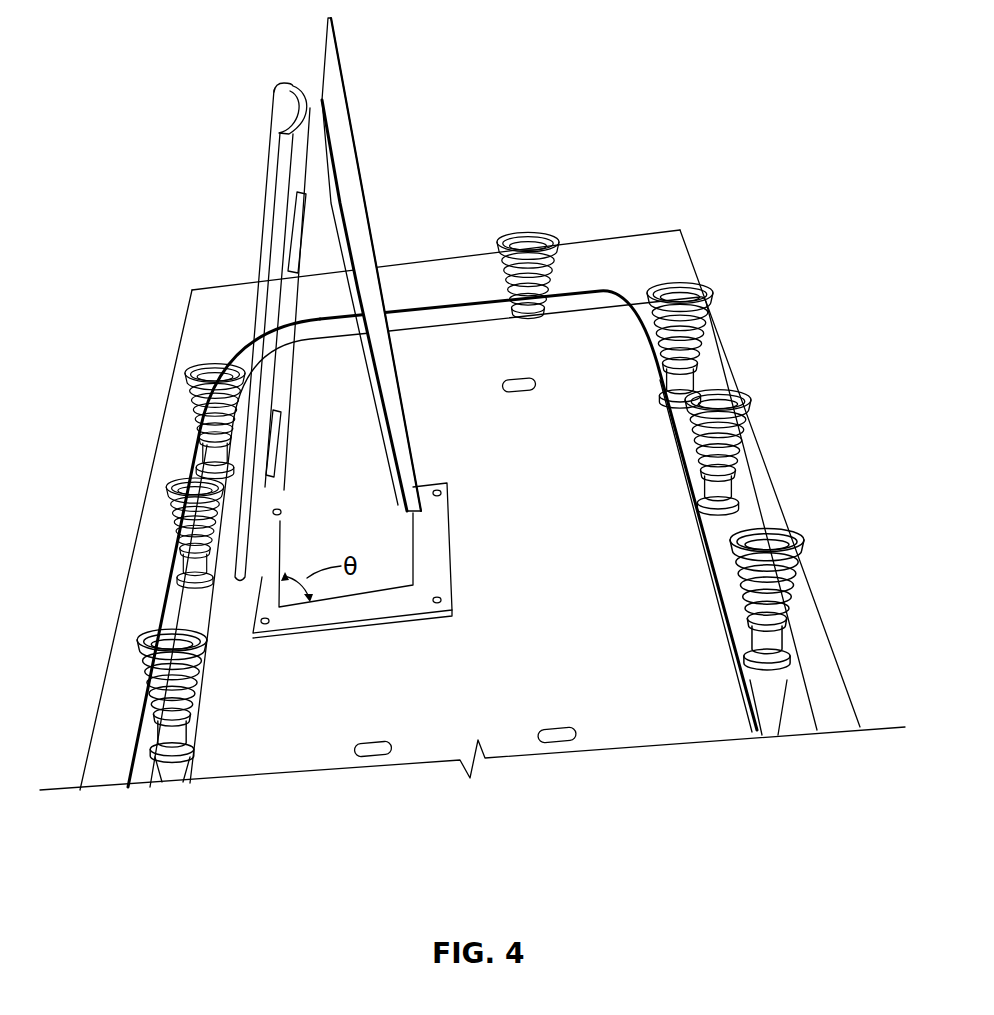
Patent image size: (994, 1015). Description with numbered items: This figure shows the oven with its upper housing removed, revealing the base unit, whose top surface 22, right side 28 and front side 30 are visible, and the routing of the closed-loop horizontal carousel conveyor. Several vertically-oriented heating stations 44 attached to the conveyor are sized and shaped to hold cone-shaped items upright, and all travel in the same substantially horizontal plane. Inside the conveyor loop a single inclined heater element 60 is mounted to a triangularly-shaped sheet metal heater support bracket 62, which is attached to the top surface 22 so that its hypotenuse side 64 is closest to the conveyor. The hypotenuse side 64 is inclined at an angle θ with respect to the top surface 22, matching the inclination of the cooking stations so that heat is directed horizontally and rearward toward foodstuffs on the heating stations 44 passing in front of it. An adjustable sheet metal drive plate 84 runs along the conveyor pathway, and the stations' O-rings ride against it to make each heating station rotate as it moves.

The top surface 22 is at (680, 233).
The right side 28 is at (645, 232).
The front side 30 is at (730, 362).
The heating station 44 is at (528, 232).
The heater element 60 is at (268, 150).
The heater support bracket 62 is at (360, 173).
The hypotenuse side 64 is at (290, 517).
The drive plate 84 is at (145, 604).